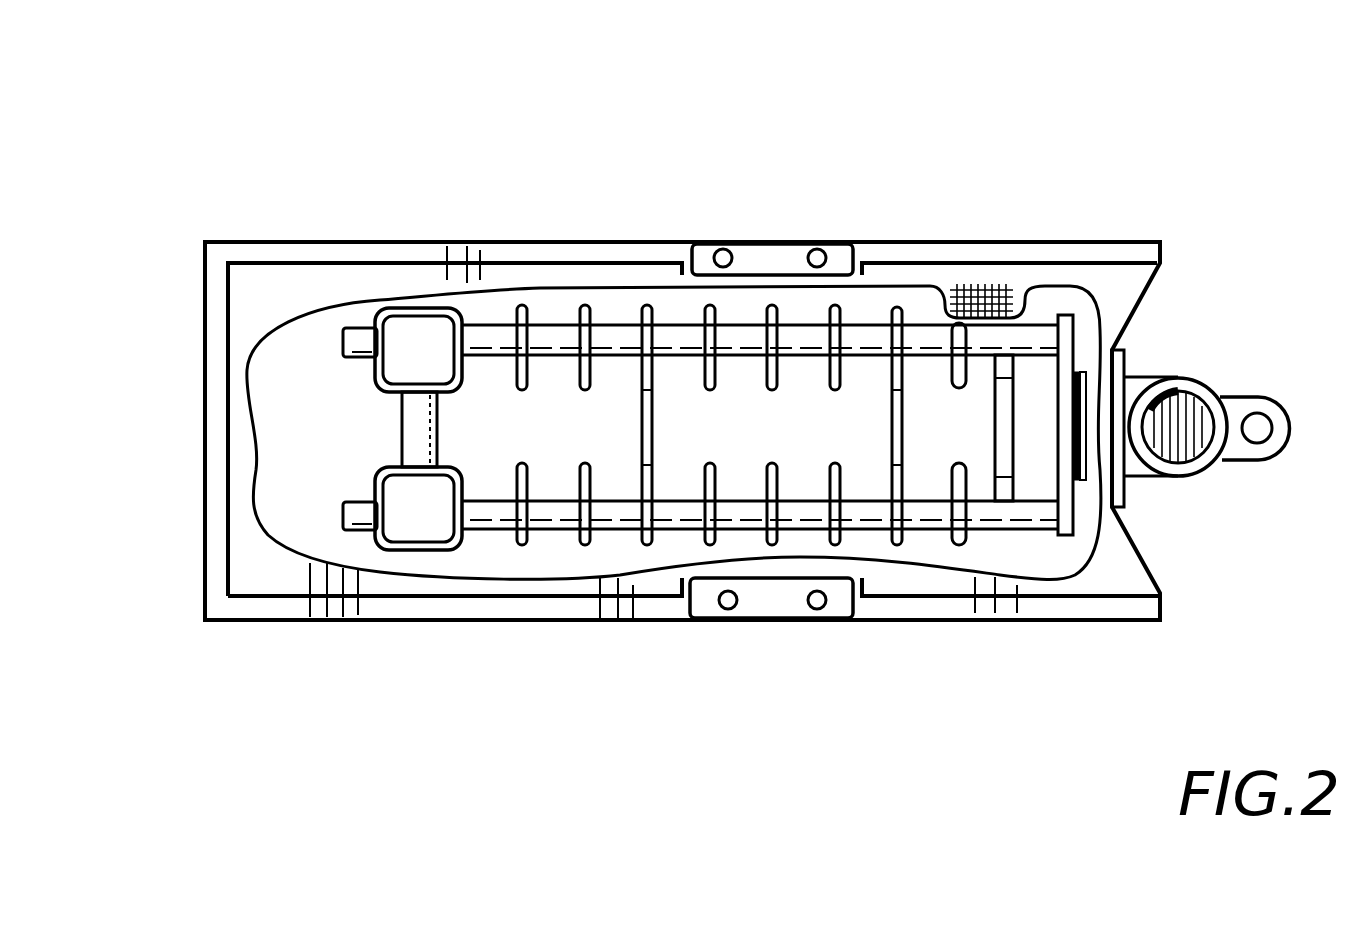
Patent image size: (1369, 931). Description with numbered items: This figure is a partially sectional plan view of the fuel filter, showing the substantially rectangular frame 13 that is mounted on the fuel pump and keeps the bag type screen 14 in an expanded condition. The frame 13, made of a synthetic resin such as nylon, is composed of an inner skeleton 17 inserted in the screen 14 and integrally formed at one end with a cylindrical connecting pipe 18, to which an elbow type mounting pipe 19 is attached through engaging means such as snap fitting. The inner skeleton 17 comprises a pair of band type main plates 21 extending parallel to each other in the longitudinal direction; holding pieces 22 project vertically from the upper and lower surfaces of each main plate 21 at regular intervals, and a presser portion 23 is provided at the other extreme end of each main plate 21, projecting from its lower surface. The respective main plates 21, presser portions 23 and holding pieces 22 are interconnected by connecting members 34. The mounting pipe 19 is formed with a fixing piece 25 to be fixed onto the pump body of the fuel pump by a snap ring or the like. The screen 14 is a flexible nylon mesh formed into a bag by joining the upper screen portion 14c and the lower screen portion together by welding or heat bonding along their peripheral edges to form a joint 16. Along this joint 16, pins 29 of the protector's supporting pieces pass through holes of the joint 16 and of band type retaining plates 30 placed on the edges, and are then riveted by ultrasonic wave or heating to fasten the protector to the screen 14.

The frame 13 is at (1215, 113).
The screen 14 is at (203, 320).
The upper screen portion 14c is at (295, 288).
The joint 16 is at (280, 613).
The inner skeleton 17 is at (913, 317).
The connecting pipe 18 is at (1087, 473).
The mounting pipe 19 is at (1177, 368).
The main plate 21 is at (553, 337).
The holding pieces 22 is at (520, 305).
The presser portion 23 is at (421, 335).
The fixing piece 25 is at (1250, 400).
The pins 29 is at (817, 250).
The retaining plates 30 is at (760, 255).
The connecting members 34 is at (422, 433).